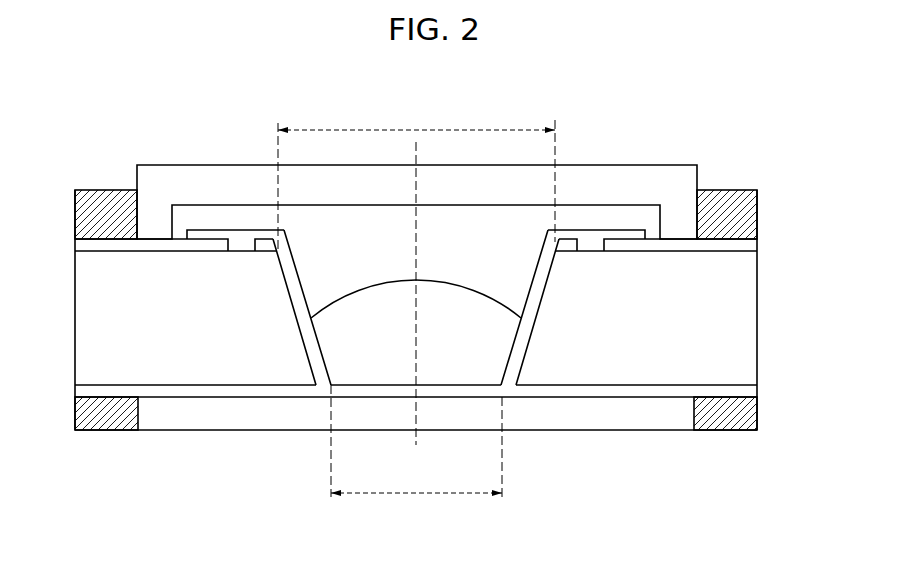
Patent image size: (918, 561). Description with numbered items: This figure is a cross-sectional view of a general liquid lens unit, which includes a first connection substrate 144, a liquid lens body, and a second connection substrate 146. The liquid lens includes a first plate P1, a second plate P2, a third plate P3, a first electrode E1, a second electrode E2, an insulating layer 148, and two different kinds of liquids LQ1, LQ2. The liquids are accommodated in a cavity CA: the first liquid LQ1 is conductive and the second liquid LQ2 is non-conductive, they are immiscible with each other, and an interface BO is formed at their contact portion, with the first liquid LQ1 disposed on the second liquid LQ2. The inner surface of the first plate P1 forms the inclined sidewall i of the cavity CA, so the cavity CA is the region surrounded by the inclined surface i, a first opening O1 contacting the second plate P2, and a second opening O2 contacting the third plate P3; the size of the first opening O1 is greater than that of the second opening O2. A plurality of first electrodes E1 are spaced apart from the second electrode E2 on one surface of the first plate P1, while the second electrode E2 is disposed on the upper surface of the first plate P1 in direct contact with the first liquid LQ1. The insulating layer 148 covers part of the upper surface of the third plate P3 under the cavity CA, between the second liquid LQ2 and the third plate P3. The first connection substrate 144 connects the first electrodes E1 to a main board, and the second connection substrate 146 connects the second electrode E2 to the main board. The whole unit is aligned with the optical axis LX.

The second plate P2 is at (645, 173).
The second connection substrate 146 is at (753, 208).
The second electrode E2 is at (752, 245).
The first plate P1 is at (745, 298).
The cavity CA is at (333, 238).
The first electrode E1 is at (737, 388).
The insulating layer 148 is at (368, 392).
The third plate P3 is at (230, 423).
The first connection substrate 144 is at (753, 412).
The interface BO is at (490, 297).
The first liquid LQ1 is at (492, 220).
The second liquid LQ2 is at (470, 370).
The inclined surface i is at (280, 287).
The optical axis LX is at (416, 309).
The first opening O1 is at (416, 175).
The second opening O2 is at (416, 458).